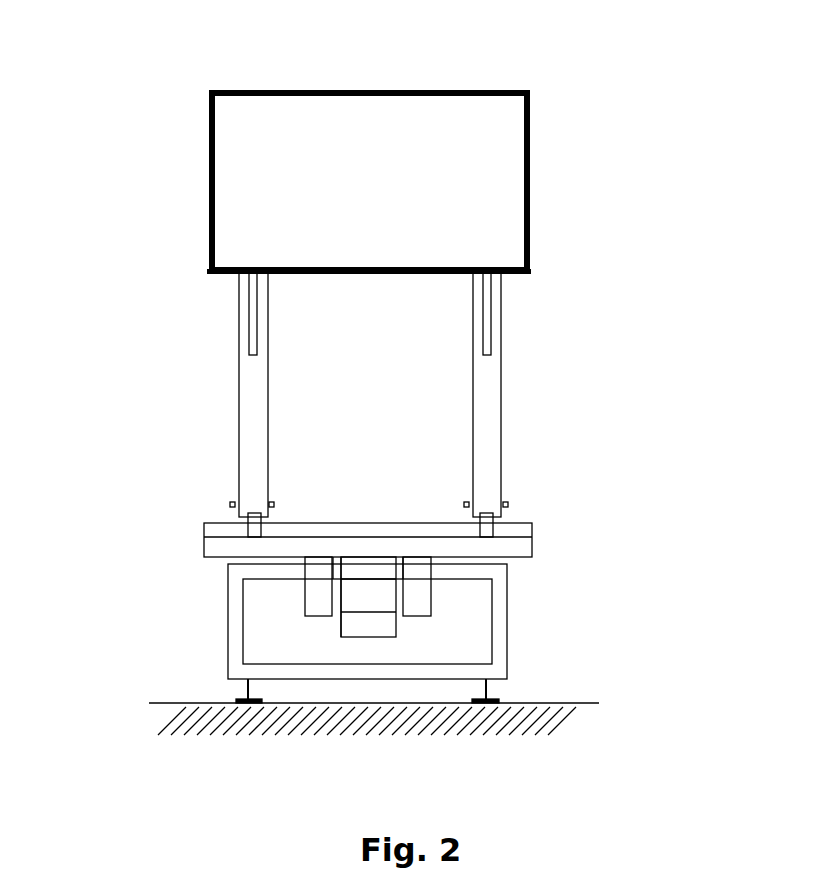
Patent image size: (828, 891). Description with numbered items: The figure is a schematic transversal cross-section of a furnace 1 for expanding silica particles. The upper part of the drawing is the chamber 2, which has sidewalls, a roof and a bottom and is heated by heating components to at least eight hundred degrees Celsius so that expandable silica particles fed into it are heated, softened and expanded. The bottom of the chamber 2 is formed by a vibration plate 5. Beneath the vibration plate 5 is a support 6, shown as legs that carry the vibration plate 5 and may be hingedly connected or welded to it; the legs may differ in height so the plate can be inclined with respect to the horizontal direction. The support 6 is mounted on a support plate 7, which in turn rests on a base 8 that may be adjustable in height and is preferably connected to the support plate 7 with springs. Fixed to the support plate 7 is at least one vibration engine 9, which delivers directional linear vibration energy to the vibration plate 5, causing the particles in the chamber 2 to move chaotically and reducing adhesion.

The furnace 1 is at (372, 381).
The chamber 2 is at (369, 181).
The vibration plate 5 is at (220, 282).
The support 6 is at (395, 405).
The support plate 7 is at (548, 542).
The base 8 is at (210, 618).
The vibration engine 9 is at (443, 616).